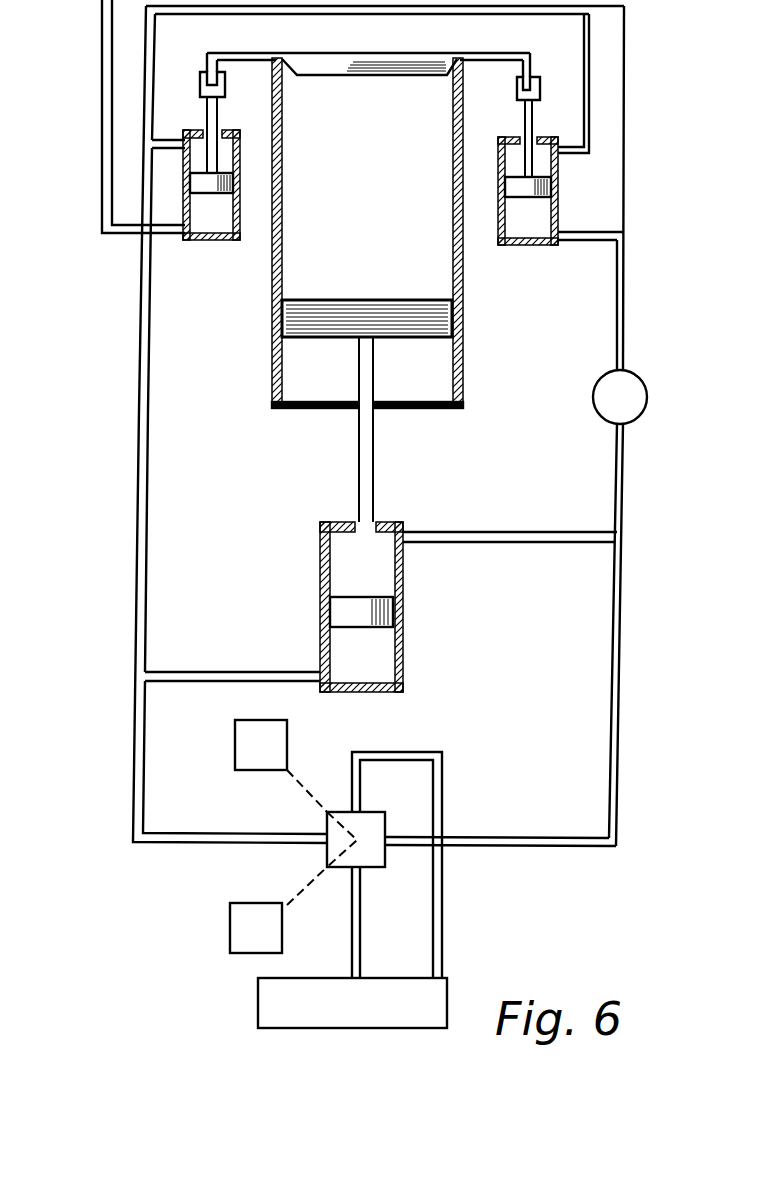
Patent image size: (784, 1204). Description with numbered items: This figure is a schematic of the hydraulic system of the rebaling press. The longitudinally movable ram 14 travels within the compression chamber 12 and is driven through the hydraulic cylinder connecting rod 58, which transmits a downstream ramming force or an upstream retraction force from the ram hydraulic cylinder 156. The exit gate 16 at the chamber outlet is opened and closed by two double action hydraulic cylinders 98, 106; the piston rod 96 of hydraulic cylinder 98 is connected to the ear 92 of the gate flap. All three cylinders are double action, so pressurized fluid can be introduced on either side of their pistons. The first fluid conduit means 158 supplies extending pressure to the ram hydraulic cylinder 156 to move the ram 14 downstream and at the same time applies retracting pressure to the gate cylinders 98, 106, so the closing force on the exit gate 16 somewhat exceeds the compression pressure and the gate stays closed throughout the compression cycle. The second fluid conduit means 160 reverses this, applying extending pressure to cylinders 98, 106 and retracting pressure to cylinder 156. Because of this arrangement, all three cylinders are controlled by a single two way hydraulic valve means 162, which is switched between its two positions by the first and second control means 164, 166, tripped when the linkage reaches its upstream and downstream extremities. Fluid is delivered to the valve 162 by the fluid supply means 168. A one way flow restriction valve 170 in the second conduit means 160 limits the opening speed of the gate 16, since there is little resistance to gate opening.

The compression chamber 12 is at (466, 275).
The ram 14 is at (276, 304).
The exit gate 16 is at (368, 64).
The hydraulic cylinder connecting rod 58 is at (364, 455).
The ear 92 is at (556, 42).
The piston rod 96 is at (535, 115).
The hydraulic cylinder 98 is at (558, 187).
The hydraulic cylinder 106 is at (262, 113).
The ram hydraulic cylinder 156 is at (320, 565).
The first fluid conduit means 158 is at (133, 757).
The second fluid conduit means 160 is at (613, 595).
The two way hydraulic valve means 162 is at (327, 826).
The first control means 164 is at (250, 740).
The second control means 166 is at (243, 923).
The fluid supply means 168 is at (441, 987).
The one way flow restriction valve 170 is at (607, 412).